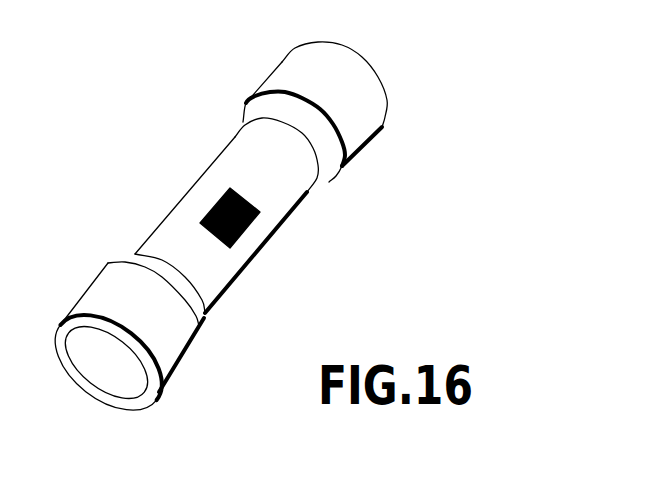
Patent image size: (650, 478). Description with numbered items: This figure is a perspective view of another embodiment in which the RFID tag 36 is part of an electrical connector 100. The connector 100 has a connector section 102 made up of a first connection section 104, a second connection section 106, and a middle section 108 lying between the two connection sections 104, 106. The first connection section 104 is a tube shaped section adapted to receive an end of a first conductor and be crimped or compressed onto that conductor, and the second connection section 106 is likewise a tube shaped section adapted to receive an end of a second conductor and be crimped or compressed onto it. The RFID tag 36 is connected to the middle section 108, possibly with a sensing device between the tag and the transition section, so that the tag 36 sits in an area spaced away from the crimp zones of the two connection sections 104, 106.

The electrical connector 100 is at (280, 228).
The connector section 102 is at (256, 255).
The first connection section 104 is at (101, 272).
The second connection section 106 is at (282, 62).
The middle section 108 is at (163, 218).
The RFID tag 36 is at (215, 203).